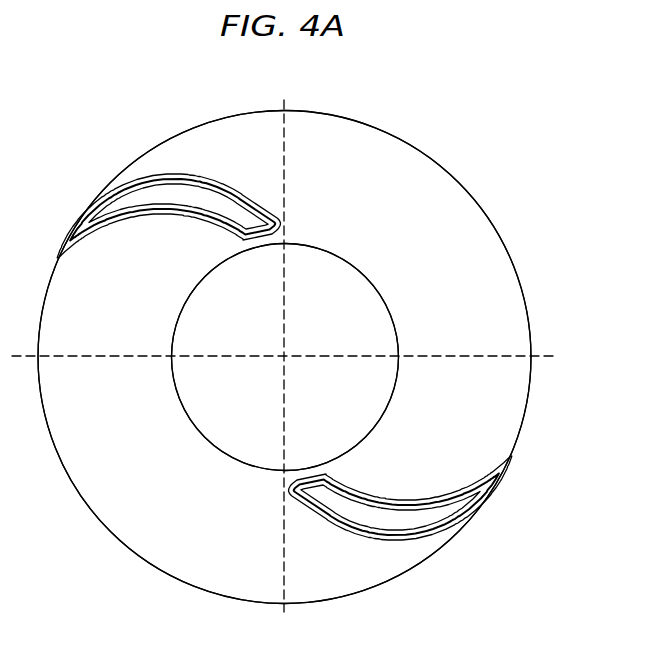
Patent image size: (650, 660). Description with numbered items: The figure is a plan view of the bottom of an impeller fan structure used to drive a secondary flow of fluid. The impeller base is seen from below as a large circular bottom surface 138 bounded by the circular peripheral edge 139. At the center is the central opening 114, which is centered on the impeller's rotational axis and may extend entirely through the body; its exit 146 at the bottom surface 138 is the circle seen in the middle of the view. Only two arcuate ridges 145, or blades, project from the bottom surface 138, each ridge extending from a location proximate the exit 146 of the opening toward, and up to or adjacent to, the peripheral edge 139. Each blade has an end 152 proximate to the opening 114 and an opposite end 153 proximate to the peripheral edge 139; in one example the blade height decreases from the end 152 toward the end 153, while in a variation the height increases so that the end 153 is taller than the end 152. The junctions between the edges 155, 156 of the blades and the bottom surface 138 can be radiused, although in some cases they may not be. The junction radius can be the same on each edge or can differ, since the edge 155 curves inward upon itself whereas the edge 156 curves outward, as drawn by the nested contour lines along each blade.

The central opening 114 is at (212, 405).
The bottom surface 138 is at (467, 242).
The peripheral edge 139 is at (353, 597).
The arcuate ridges 145 is at (163, 199).
The exit of the opening 146 is at (328, 252).
The end of blade proximate to the opening 152 is at (256, 238).
The end of blade proximate to the peripheral edge 153 is at (83, 217).
The blade edge curving inward 155 is at (475, 483).
The blade edge curving outward 156 is at (437, 535).